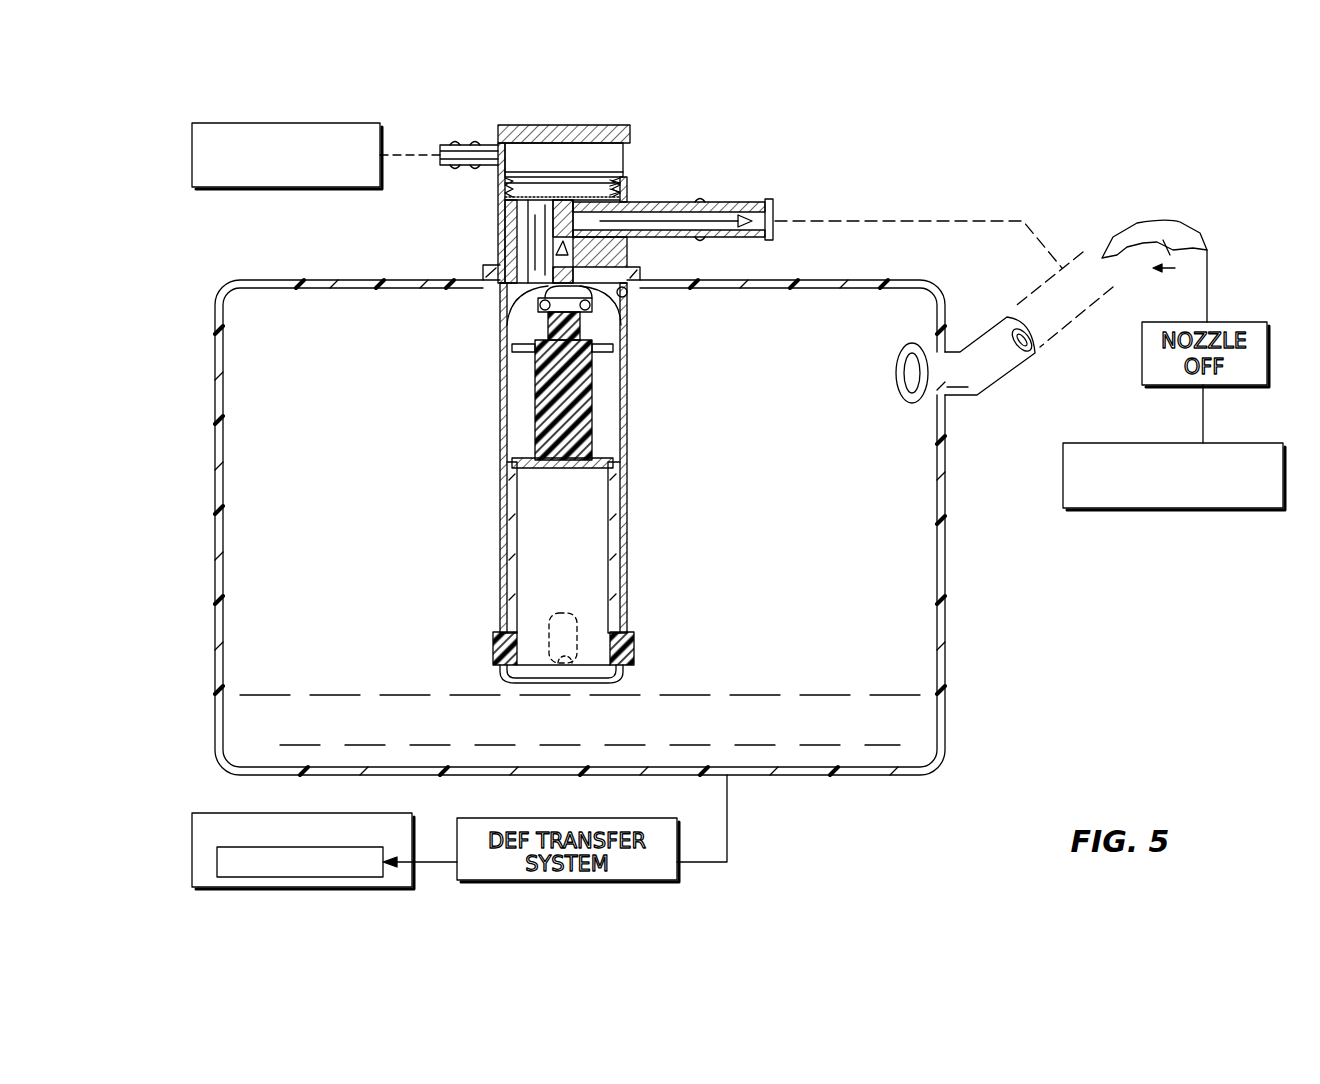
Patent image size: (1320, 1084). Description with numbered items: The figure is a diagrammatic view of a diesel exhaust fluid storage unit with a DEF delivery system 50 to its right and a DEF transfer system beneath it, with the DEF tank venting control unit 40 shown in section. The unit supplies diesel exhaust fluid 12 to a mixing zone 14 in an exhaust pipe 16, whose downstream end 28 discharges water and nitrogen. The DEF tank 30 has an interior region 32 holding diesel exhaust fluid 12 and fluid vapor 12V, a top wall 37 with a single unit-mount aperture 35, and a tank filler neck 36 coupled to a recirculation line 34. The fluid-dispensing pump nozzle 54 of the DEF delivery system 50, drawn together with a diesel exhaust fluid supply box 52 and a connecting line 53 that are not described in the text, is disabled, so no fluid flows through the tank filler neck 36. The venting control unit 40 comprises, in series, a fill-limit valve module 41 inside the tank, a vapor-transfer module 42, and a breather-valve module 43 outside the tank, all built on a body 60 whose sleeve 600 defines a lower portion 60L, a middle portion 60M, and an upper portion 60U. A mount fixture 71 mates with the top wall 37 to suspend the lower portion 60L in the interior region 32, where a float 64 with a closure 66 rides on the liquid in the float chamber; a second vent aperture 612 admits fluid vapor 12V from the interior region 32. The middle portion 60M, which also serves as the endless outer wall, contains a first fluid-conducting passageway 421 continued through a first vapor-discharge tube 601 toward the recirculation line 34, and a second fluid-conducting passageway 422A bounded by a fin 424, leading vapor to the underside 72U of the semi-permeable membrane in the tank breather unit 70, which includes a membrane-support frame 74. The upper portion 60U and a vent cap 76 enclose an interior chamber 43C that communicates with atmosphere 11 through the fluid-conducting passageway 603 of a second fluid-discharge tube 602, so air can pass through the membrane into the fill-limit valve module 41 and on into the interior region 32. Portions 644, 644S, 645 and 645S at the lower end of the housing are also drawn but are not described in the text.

The atmosphere 11 is at (255, 123).
The diesel exhaust fluid 12 is at (772, 705).
The mixing zone 14 is at (217, 862).
The exhaust pipe 16 is at (200, 814).
The downstream end 28 is at (193, 833).
The DEF tank 30 is at (215, 490).
The interior region 32 is at (306, 321).
The recirculation line 34 is at (910, 221).
The unit-mount aperture 35 is at (627, 294).
The tank filler neck 36 is at (1012, 372).
The top wall 37 is at (785, 283).
The DEF tank venting control unit 40 is at (640, 142).
The fill-limit valve module 41 is at (500, 383).
The vapor-transfer module 42 is at (499, 232).
The breather-valve module 43 is at (498, 175).
The interior chamber 43C is at (596, 125).
The DEF delivery system 50 is at (1215, 196).
The diesel exhaust fluid supply 52 is at (1128, 508).
The supply line 53 is at (1203, 421).
The fluid-dispensing pump nozzle 54 is at (1163, 222).
The body 60 is at (500, 468).
The upper portion 60U is at (623, 180).
The middle portion 60M is at (496, 247).
The lower portion 60L is at (497, 547).
The float 64 is at (597, 408).
The closure 66 is at (620, 315).
The tank breather unit 70 is at (577, 153).
The mount fixture 71 is at (647, 273).
The underside 72U is at (503, 201).
The membrane-support frame 74 is at (622, 188).
The vent cap 76 is at (540, 125).
The fluid vapor 12V is at (708, 202).
The first fluid-conducting passageway 421 is at (632, 250).
The second fluid-conducting passageway 422A is at (530, 272).
The fin 424 is at (695, 237).
The sleeve 600 is at (632, 453).
The first vapor-discharge tube 601 is at (740, 200).
The second fluid-discharge tube 602 is at (450, 143).
The fluid-conducting passageway 603 is at (478, 145).
The second vent aperture 612 is at (540, 322).
The suction inlet 644 is at (575, 658).
The inlet slot 644S is at (565, 625).
The foot 645 is at (500, 647).
The side slot 645S is at (628, 604).